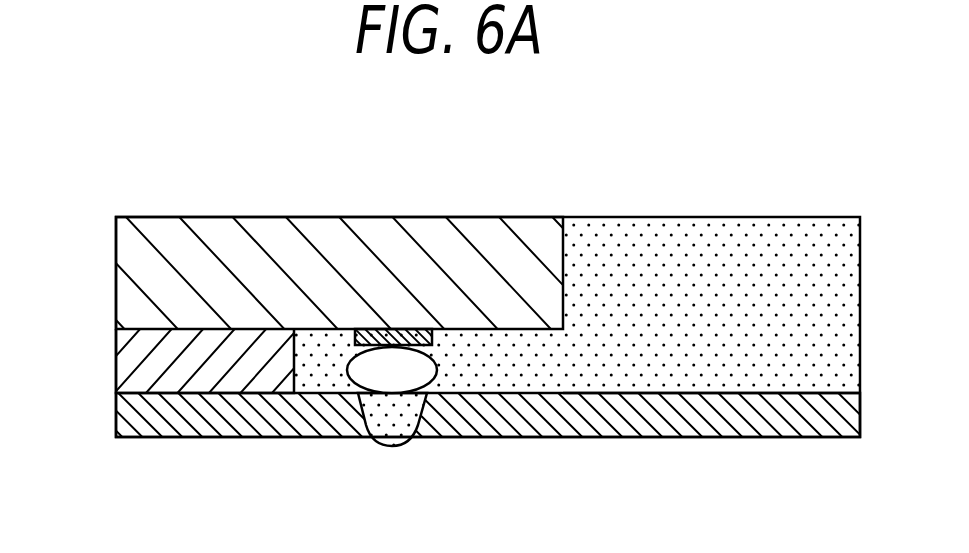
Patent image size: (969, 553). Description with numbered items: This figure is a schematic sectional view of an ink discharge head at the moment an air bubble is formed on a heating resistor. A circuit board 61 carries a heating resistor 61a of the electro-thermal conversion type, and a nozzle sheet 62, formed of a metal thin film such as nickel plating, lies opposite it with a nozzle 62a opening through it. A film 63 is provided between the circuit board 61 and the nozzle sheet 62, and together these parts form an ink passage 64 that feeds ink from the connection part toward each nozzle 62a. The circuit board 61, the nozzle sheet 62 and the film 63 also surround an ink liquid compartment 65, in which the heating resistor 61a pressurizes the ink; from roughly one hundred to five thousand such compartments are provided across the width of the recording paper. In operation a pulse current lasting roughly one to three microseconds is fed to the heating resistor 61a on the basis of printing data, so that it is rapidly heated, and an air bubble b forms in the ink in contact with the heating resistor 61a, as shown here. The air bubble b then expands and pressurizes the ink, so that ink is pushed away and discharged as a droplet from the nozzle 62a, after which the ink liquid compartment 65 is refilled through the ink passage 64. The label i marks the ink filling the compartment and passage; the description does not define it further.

The circuit board 61 is at (293, 263).
The heating resistor 61a is at (382, 330).
The nozzle sheet 62 is at (142, 418).
The nozzle 62a is at (378, 445).
The film 63 is at (143, 362).
The ink passage 64 is at (702, 258).
The ink liquid compartment 65 is at (505, 367).
The air bubble b is at (400, 373).
The interface i is at (725, 370).